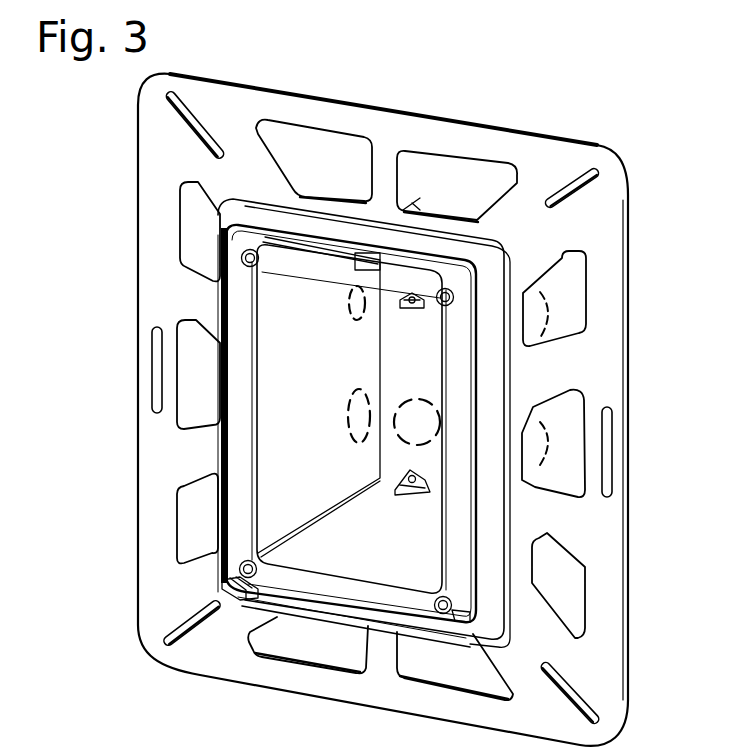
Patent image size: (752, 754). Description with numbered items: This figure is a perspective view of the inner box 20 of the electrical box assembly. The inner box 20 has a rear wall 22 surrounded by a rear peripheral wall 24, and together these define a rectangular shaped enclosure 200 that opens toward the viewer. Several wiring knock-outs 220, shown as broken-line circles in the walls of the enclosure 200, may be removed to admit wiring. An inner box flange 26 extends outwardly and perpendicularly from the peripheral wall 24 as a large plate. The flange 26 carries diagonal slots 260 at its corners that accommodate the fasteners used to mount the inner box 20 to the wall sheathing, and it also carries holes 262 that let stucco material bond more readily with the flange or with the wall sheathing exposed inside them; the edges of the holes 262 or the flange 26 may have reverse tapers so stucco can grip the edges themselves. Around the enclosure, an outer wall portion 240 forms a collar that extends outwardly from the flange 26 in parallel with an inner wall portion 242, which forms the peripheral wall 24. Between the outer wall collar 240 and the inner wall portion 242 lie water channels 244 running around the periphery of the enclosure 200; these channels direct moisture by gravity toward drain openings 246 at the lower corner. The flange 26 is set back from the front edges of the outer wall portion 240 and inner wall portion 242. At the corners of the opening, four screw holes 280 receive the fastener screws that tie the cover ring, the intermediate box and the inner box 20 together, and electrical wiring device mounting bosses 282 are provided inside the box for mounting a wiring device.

The inner box 20 is at (672, 183).
The rear wall 22 is at (438, 382).
The rear peripheral wall 24 is at (445, 210).
The inner box flange 26 is at (553, 157).
The rectangular shaped enclosure 200 is at (351, 431).
The wiring knock-outs 220 is at (417, 423).
The outer wall portion 240 is at (493, 500).
The inner wall portion 242 is at (460, 400).
The water channels 244 is at (243, 490).
The drain openings 246 is at (210, 581).
The slots 260 is at (188, 117).
The holes 262 is at (418, 153).
The screw holes 280 is at (452, 293).
The electrical wiring device mounting bosses 282 is at (415, 305).